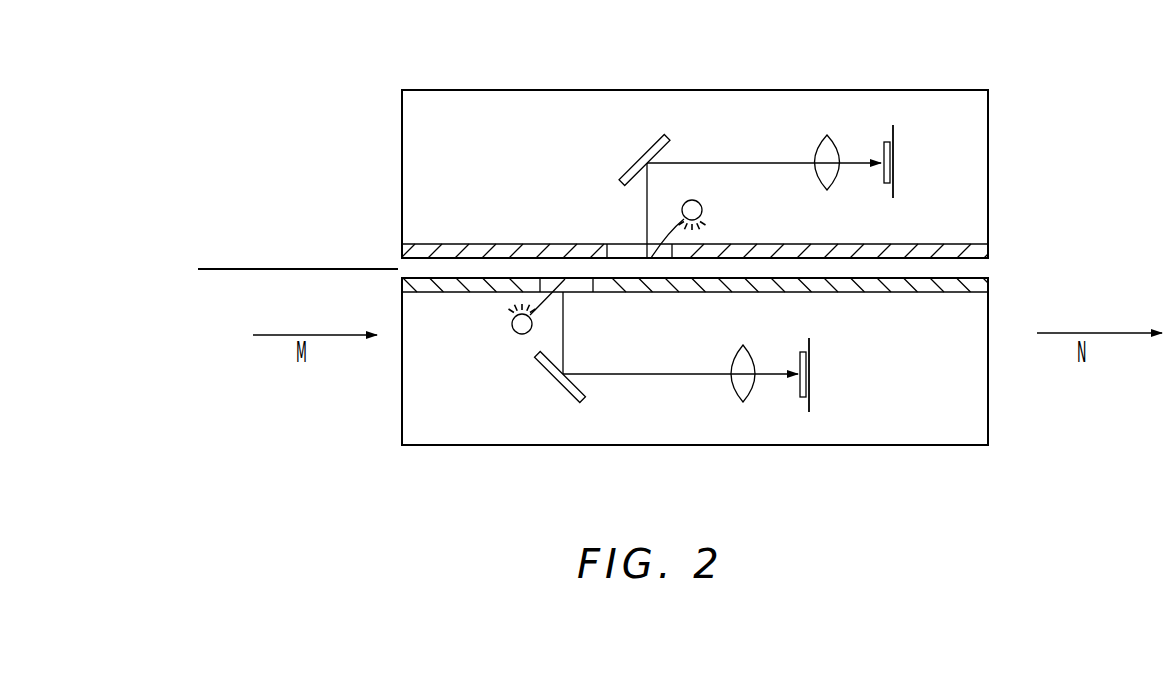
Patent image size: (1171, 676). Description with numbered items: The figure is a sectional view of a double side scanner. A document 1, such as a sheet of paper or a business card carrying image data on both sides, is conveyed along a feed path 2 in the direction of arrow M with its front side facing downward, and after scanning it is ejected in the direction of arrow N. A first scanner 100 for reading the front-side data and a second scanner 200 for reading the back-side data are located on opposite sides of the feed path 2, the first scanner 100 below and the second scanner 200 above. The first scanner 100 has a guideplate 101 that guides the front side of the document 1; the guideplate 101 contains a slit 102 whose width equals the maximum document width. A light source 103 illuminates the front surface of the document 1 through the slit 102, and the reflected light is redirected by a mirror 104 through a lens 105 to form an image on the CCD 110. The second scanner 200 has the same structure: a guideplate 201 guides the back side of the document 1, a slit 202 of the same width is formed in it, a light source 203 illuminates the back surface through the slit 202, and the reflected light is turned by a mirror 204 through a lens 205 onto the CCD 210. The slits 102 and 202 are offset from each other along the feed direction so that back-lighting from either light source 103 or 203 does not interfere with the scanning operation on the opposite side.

The document 1 is at (312, 268).
The feed path 2 is at (487, 262).
The first scanner 100 is at (660, 445).
The guideplate 101 is at (462, 292).
The slit 102 is at (583, 292).
The light source 103 is at (515, 333).
The mirror 104 is at (555, 378).
The lens 105 is at (733, 391).
The CCD 110 is at (803, 397).
The second scanner 200 is at (742, 90).
The guideplate 201 is at (513, 245).
The slit 202 is at (633, 244).
The light source 203 is at (703, 208).
The mirror 204 is at (640, 160).
The lens 205 is at (825, 136).
The CCD 210 is at (886, 183).